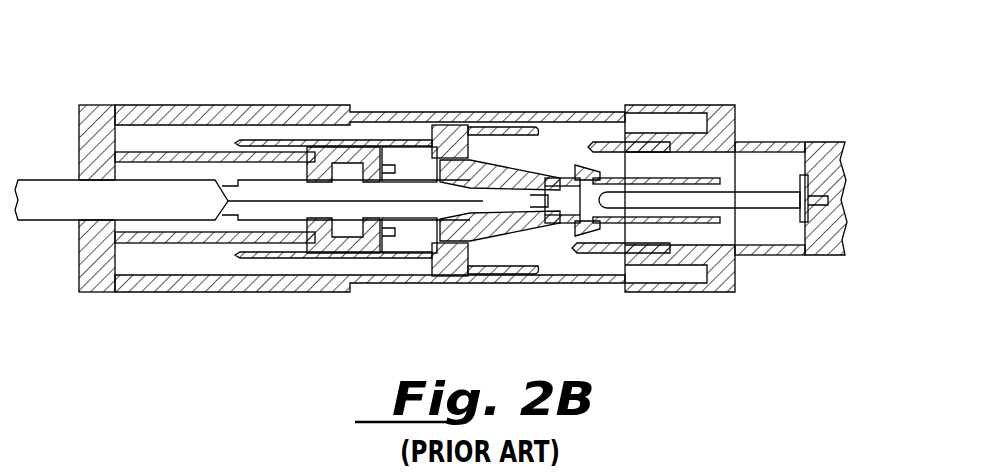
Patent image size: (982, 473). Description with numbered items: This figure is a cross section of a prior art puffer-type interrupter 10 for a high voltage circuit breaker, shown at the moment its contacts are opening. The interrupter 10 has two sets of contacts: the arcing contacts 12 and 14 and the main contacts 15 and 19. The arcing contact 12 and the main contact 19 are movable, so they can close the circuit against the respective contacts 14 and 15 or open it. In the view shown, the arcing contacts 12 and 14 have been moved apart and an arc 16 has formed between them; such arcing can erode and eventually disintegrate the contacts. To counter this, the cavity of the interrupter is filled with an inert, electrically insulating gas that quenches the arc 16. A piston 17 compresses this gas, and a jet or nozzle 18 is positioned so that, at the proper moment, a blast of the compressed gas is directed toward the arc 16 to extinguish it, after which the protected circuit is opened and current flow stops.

The interrupter 10 is at (706, 71).
The arcing contact 12 is at (557, 178).
The arcing contact 14 is at (607, 199).
The main contact 15 is at (604, 253).
The arc 16 is at (575, 186).
The piston 17 is at (283, 240).
The nozzle 18 is at (462, 238).
The main contact 19 is at (535, 127).